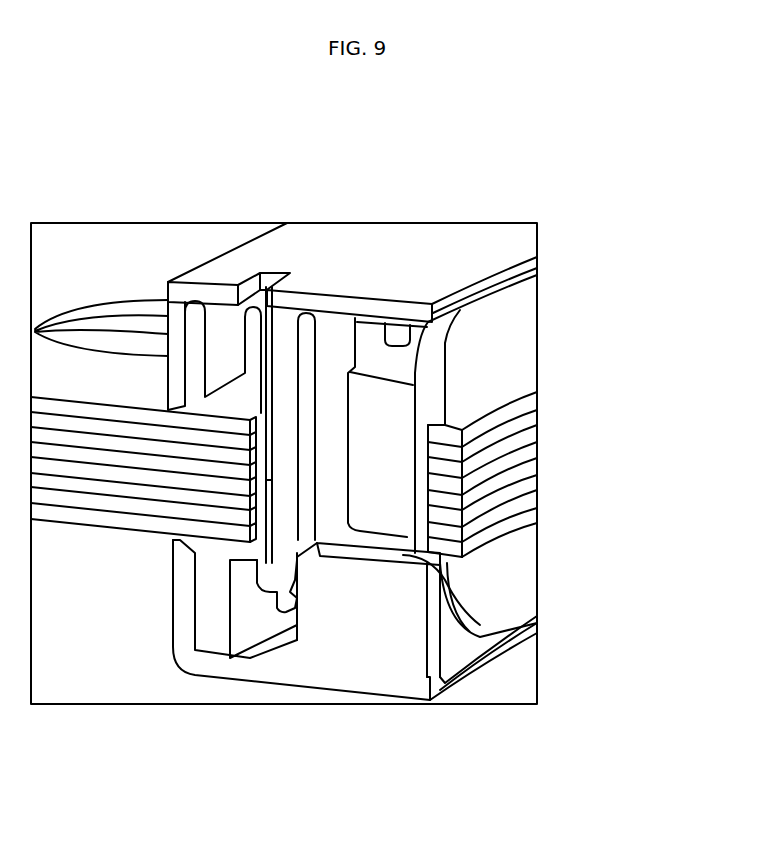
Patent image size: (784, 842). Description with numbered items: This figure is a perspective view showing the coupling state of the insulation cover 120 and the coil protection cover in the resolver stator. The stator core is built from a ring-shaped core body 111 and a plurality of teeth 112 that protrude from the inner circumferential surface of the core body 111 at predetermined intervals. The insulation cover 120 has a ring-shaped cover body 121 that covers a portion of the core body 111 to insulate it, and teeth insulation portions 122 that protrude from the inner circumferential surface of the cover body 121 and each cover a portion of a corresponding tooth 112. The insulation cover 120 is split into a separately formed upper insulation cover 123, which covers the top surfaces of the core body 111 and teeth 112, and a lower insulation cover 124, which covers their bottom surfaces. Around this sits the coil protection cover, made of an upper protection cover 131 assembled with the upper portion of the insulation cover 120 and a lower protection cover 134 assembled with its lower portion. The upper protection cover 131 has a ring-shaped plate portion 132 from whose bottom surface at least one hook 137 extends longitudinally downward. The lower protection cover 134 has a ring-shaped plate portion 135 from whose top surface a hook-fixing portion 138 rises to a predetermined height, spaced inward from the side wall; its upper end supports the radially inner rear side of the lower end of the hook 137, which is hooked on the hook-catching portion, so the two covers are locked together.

The core body 111 is at (143, 257).
The teeth 112 is at (522, 452).
The insulation cover 120 is at (520, 337).
The cover body 121 is at (243, 605).
The teeth insulation portions 122 is at (527, 572).
The upper insulation cover 123 is at (338, 328).
The lower insulation cover 124 is at (332, 527).
The upper protection cover 131 is at (507, 244).
The plate portion 132 is at (437, 248).
The lower protection cover 134 is at (252, 683).
The plate portion 135 is at (455, 675).
The hook 137 is at (307, 328).
The hook-fixing portion 138 is at (403, 555).